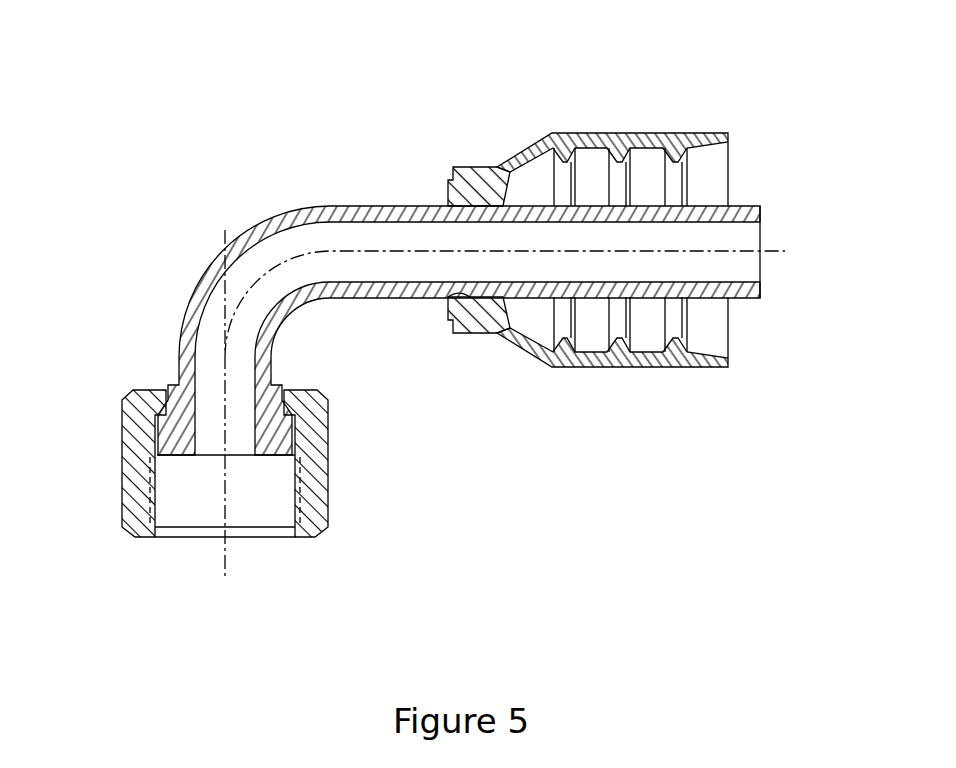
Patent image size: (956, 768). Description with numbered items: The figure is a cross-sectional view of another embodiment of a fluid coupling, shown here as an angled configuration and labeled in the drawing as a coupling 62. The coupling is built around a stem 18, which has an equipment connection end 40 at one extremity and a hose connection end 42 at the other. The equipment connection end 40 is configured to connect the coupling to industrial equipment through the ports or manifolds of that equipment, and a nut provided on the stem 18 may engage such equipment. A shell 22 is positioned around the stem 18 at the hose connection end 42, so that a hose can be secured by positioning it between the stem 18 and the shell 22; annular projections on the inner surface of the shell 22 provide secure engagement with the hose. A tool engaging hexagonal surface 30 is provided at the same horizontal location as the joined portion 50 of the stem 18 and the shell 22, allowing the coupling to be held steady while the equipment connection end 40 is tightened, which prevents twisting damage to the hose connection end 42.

The stem 18 is at (387, 205).
The shell 22 is at (700, 133).
The tool engaging hexagonal surface 30 is at (475, 167).
The equipment connection end 40 is at (107, 464).
The hose connection end 42 is at (586, 198).
The joined portion 50 is at (475, 297).
The JIC 37 Degree Flare coupling 62 is at (451, 294).